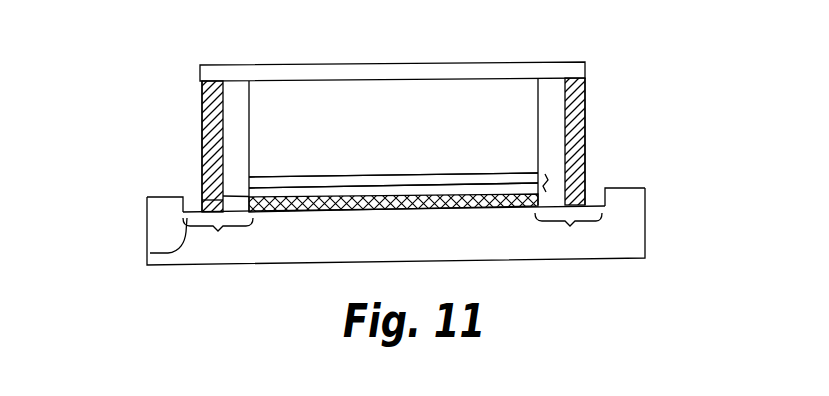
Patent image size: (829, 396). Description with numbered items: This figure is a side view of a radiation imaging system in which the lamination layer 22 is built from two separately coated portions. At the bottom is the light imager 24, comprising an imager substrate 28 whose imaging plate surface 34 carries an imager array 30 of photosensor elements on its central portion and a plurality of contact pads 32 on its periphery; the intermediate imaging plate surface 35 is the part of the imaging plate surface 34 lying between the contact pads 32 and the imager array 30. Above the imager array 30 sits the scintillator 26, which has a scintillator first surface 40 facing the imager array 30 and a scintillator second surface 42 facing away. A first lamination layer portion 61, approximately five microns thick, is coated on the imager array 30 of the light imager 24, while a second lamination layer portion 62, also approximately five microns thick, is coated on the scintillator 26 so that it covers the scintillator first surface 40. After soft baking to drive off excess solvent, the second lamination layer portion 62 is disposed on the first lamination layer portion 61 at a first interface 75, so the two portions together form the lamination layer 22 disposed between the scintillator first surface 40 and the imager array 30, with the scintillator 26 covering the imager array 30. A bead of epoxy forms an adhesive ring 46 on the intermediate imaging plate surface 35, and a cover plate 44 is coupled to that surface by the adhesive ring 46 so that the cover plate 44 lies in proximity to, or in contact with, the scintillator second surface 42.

The lamination layer 22 is at (586, 164).
The light imager 24 is at (393, 244).
The scintillator 26 is at (385, 142).
The imager substrate 28 is at (622, 232).
The imager array 30 is at (418, 210).
The contact pads 32 is at (147, 207).
The imaging plate surface 34 is at (150, 253).
The intermediate imaging plate surface 35 is at (392, 237).
The scintillator first surface 40 is at (402, 176).
The scintillator second surface 42 is at (314, 81).
The cover plate 44 is at (542, 62).
The adhesive ring 46 is at (586, 117).
The first lamination layer portion 61 is at (207, 193).
The second lamination layer portion 62 is at (323, 178).
The first interface 75 is at (485, 184).